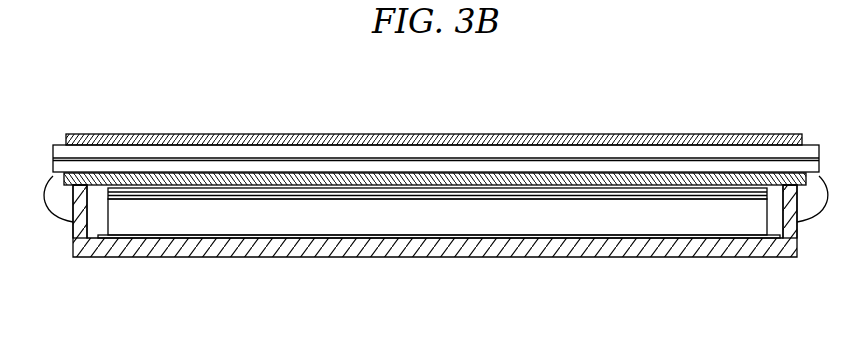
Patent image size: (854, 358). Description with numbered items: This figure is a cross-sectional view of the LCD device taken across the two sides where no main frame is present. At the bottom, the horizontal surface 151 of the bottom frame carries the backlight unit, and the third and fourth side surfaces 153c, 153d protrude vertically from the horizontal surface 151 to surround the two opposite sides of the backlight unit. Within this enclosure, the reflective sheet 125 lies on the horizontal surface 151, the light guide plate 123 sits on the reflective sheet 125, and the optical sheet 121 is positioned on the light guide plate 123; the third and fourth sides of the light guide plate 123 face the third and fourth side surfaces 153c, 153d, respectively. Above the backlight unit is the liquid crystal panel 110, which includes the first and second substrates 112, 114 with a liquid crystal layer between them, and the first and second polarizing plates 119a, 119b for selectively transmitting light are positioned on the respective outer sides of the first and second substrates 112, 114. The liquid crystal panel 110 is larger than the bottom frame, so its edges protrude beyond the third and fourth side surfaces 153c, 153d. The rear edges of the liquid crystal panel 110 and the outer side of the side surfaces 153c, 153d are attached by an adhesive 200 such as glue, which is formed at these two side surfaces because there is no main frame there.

The liquid crystal panel 110 is at (405, 75).
The first substrate 112 is at (440, 165).
The second substrate 114 is at (393, 153).
The first polarizing plate 119a is at (222, 173).
The second polarizing plate 119b is at (183, 134).
The optical sheet 121 is at (319, 190).
The light guide plate 123 is at (282, 223).
The reflective sheet 125 is at (236, 240).
The horizontal surface 151 is at (466, 250).
The third side surface 153c is at (82, 236).
The fourth side surface 153d is at (800, 236).
The adhesive 200 is at (48, 192).